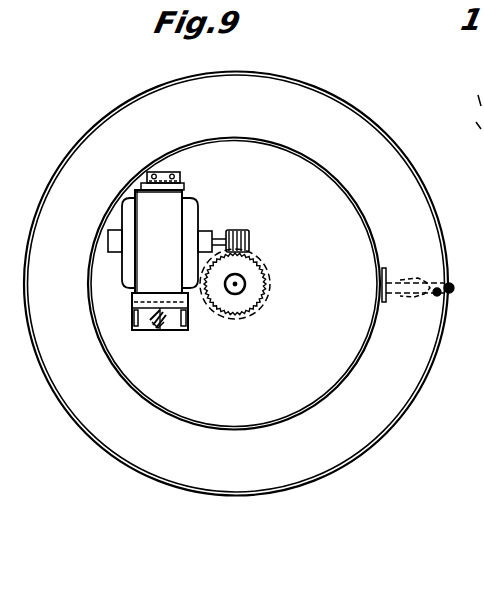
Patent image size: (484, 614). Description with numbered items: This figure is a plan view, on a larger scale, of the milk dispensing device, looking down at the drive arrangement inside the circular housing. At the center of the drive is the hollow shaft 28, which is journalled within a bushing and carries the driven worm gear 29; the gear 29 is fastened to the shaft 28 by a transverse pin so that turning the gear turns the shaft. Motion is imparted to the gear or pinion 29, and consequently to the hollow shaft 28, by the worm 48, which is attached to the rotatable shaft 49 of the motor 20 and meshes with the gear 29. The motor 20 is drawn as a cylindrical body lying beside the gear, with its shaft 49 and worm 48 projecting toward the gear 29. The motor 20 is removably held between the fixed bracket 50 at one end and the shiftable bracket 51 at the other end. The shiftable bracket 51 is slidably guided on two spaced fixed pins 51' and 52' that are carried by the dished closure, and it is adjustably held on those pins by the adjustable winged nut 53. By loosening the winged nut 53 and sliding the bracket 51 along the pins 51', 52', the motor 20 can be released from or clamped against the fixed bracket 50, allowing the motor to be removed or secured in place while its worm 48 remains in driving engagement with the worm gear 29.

The motor 20 is at (160, 241).
The hollow shaft 28 is at (247, 286).
The worm gear 29 is at (253, 270).
The worm 48 is at (250, 240).
The rotatable shaft 49 is at (223, 234).
The fixed bracket 50 is at (176, 172).
The shiftable bracket 51 is at (169, 343).
The fixed pin 51' is at (137, 335).
The fixed pin 52' is at (194, 336).
The adjustable winged nut 53 is at (158, 331).